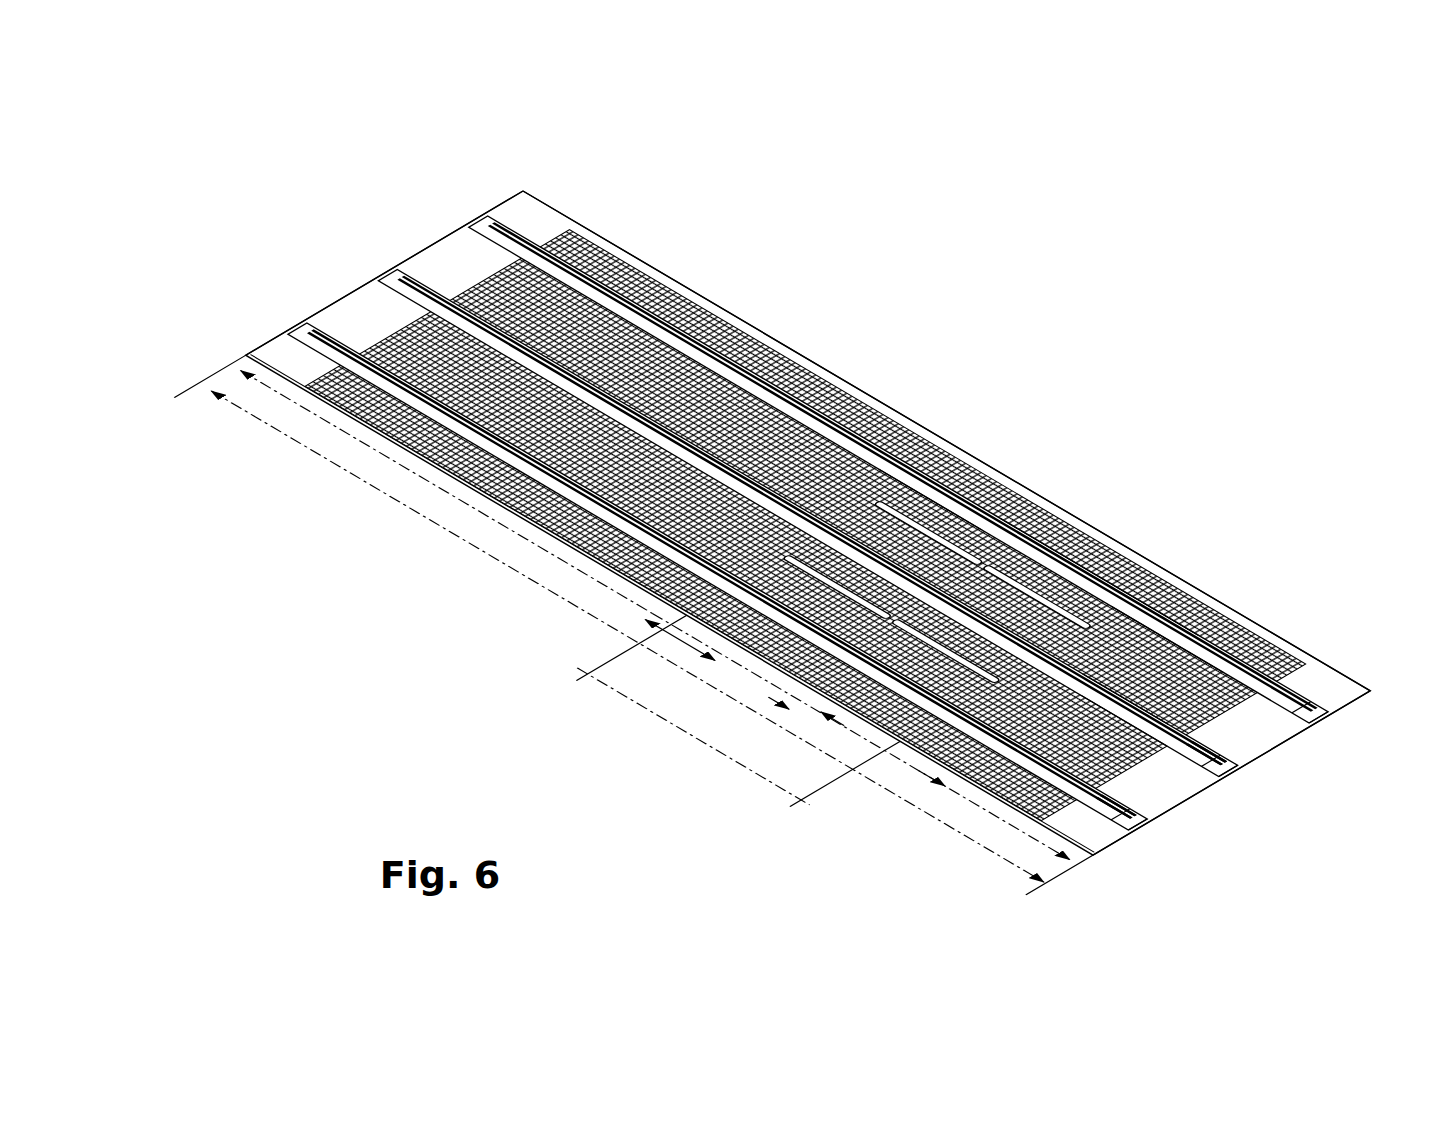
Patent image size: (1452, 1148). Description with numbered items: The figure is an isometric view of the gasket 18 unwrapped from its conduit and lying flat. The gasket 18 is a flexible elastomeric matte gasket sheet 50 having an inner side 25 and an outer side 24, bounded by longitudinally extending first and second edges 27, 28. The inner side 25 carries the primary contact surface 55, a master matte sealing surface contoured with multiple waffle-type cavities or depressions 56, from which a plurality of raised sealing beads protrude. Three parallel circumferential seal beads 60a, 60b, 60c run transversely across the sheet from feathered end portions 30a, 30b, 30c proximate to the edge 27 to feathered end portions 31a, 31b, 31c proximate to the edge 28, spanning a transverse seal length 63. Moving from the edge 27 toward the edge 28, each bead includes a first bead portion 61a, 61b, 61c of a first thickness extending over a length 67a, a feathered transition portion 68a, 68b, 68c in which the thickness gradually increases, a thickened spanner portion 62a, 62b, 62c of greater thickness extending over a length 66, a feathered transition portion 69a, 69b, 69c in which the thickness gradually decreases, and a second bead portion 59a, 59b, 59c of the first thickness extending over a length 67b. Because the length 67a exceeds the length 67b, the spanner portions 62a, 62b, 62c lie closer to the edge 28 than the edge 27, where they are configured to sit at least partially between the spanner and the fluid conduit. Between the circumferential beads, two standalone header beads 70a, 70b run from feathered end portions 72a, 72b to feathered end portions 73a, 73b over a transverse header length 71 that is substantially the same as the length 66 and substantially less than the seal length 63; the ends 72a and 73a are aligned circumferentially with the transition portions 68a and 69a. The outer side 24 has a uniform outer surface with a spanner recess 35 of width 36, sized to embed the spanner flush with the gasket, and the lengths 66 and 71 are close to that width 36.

The gasket 18 is at (640, 128).
The outer side 24 is at (913, 758).
The inner side 25 is at (445, 256).
The first edge 27 is at (317, 287).
The second edge 28 is at (1344, 703).
The feathered end portion 30a is at (475, 210).
The feathered end portion 30b is at (378, 256).
The feathered end portion 30c is at (293, 318).
The feathered end portion 31a is at (1322, 698).
The feathered end portion 31b is at (1205, 770).
The feathered end portion 31c is at (1115, 822).
The spanner recess 35 is at (820, 702).
The width 36 is at (780, 700).
The flexible sheet 50 is at (518, 212).
The primary contact surface 55 is at (382, 326).
The waffle-type cavities 56 is at (250, 346).
The second bead portion 59a is at (1302, 692).
The second bead portion 59b is at (1203, 740).
The second bead portion 59c is at (1098, 838).
The circumferential seal bead 60a is at (657, 310).
The circumferential seal bead 60b is at (565, 366).
The circumferential seal bead 60c is at (402, 446).
The first bead portion 61a is at (705, 343).
The first bead portion 61b is at (623, 288).
The first bead portion 61c is at (346, 410).
The thickened spanner portion 62a is at (1040, 635).
The thickened spanner portion 62b is at (1100, 670).
The thickened spanner portion 62c is at (745, 633).
The transverse seal length 63 is at (513, 574).
The length 66 is at (690, 641).
The length 67a is at (470, 505).
The length 67b is at (963, 803).
The feathered transition portion 68a is at (1030, 531).
The feathered transition portion 68b is at (885, 495).
The feathered transition portion 68c is at (655, 610).
The feathered transition portion 69a is at (1185, 688).
The feathered transition portion 69b is at (1147, 698).
The feathered transition portion 69c is at (935, 772).
The standalone header bead 70a is at (1137, 580).
The standalone header bead 70b is at (1170, 623).
The transverse header length 71 is at (590, 656).
The feathered end portion 72a is at (960, 540).
The feathered end portion 72b is at (847, 521).
The feathered end portion 73a is at (1212, 745).
The feathered end portion 73b is at (1110, 800).